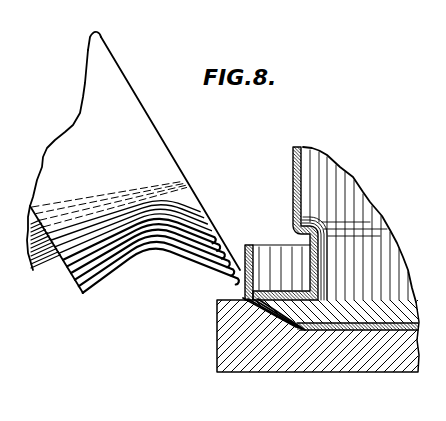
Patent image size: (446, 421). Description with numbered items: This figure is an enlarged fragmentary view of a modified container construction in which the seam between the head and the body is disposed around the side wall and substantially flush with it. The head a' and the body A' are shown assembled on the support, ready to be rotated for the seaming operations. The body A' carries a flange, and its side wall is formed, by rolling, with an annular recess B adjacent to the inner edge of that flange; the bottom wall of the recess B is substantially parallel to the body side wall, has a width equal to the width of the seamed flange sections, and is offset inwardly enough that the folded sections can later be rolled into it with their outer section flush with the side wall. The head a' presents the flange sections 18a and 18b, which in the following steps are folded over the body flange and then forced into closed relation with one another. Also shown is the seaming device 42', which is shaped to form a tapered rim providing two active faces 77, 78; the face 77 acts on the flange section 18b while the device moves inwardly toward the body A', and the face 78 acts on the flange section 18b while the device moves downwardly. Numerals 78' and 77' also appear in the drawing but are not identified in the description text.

The active face 77 is at (89, 34).
The active face 78 is at (133, 165).
The seaming device 42' is at (135, 221).
The flange section 18b is at (247, 244).
The formed sheet section 78' is at (285, 223).
The body A' is at (359, 224).
The annular recess B is at (318, 265).
The flange section 18a is at (244, 320).
The base block 77' is at (318, 348).
The head a' is at (357, 358).